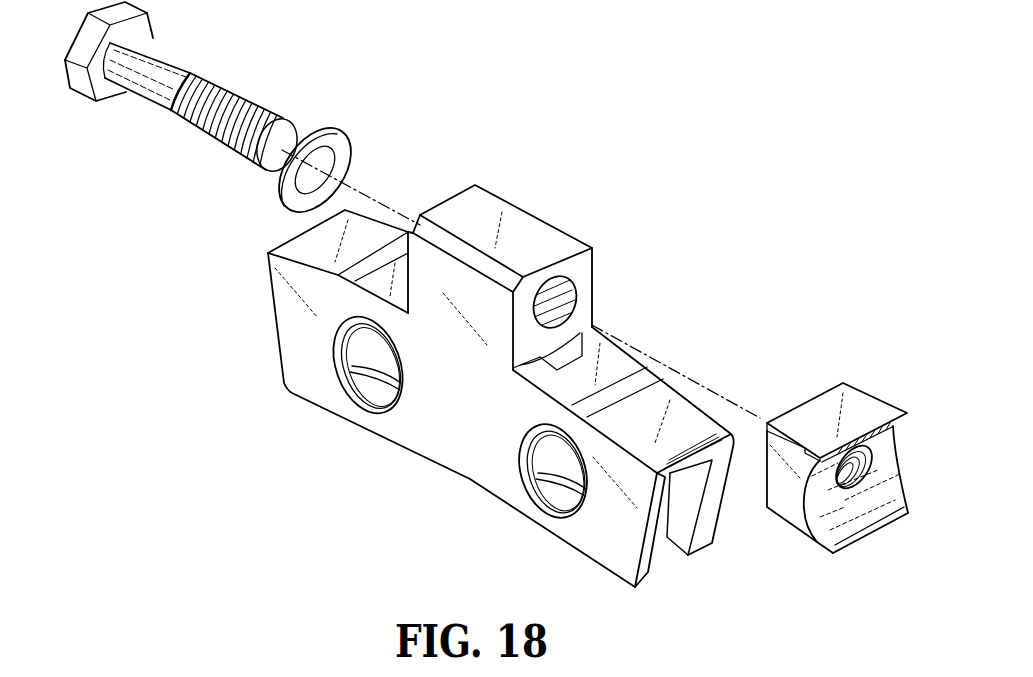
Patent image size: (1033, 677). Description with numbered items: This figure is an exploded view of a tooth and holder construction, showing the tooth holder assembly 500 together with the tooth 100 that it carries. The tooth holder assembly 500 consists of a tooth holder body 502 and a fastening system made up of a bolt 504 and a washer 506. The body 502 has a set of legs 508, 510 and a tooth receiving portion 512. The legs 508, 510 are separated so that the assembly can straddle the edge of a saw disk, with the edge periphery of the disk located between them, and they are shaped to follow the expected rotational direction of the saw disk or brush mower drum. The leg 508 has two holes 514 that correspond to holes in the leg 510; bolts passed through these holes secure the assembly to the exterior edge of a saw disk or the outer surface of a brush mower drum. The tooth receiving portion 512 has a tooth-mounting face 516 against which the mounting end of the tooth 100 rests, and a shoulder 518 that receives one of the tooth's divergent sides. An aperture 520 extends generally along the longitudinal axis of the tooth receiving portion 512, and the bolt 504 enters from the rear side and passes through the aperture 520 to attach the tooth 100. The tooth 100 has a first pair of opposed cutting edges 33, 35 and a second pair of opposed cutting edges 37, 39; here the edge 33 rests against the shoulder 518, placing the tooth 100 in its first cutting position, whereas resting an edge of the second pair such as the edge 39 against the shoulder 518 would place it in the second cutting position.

The tooth holder assembly 500 is at (748, 133).
The tooth holder body 502 is at (481, 480).
The bolt 504 is at (145, 80).
The washer 506 is at (323, 128).
The leg 508 is at (651, 563).
The leg 510 is at (710, 534).
The tooth receiving portion 512 is at (486, 205).
The holes 514 is at (564, 457).
The tooth-mounting face 516 is at (578, 265).
The shoulder 518 is at (628, 363).
The aperture 520 is at (567, 301).
The tooth 100 is at (872, 380).
The cutting edge 33 is at (877, 533).
The cutting edge 35 is at (866, 428).
The cutting edge 37 is at (799, 503).
The cutting edge 39 is at (896, 461).